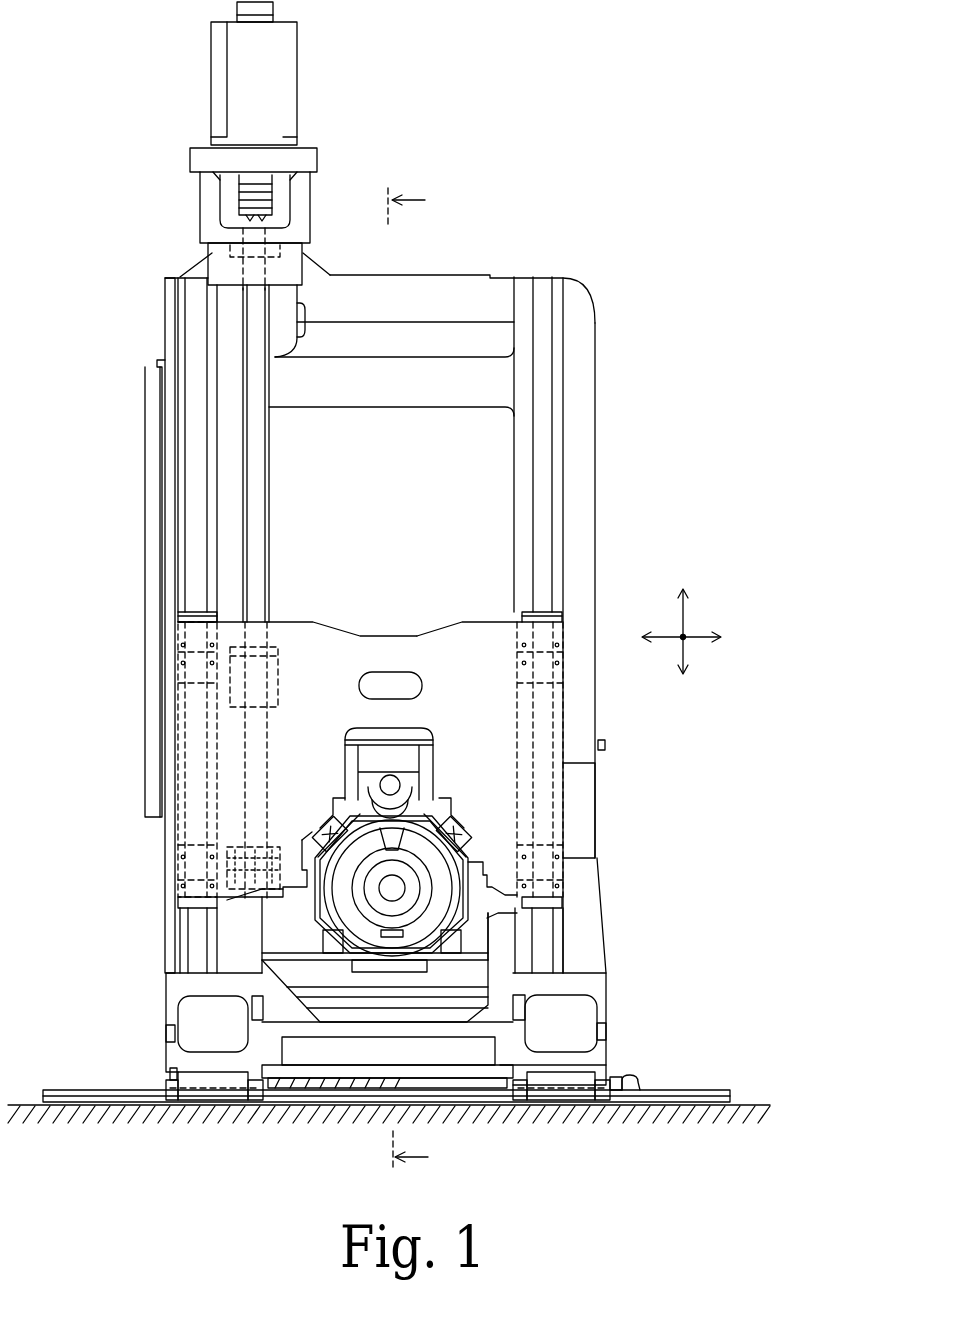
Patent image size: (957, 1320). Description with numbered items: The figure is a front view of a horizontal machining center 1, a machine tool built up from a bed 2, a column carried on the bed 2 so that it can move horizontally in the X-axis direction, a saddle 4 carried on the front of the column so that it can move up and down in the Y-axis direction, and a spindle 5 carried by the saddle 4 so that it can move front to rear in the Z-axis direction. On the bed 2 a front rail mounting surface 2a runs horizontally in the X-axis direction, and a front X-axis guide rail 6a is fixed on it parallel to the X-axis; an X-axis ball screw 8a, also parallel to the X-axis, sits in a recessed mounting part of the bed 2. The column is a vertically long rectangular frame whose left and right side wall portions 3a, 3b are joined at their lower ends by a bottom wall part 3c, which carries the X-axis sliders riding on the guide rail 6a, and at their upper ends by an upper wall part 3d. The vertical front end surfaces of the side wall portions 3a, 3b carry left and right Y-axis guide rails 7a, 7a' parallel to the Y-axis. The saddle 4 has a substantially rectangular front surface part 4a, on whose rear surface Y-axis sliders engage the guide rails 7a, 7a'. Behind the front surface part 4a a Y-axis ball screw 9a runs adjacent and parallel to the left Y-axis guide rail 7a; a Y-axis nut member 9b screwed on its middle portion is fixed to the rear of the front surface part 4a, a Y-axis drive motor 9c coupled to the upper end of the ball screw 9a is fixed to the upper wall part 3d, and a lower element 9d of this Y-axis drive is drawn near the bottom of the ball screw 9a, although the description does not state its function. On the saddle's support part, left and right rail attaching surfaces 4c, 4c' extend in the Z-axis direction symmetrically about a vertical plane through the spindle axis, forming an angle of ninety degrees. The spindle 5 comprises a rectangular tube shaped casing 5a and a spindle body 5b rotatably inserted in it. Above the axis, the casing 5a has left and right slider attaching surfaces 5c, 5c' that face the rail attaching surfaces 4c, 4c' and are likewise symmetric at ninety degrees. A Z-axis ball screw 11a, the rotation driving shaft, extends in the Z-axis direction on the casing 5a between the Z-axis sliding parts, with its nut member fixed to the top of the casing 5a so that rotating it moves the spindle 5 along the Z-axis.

The horizontal machining center 1 is at (508, 214).
The bed 2 is at (738, 1098).
The front rail mounting surface 2a is at (655, 1094).
The left side wall portion 3a is at (162, 484).
The right side wall portion 3b is at (598, 492).
The bottom wall part 3c is at (470, 1058).
The upper wall part 3d is at (457, 287).
The saddle 4 is at (390, 628).
The front surface part 4a is at (465, 637).
The left rail attaching surface 4c is at (320, 797).
The right rail attaching surface 4c' is at (461, 788).
The spindle 5 is at (472, 862).
The casing 5a is at (466, 903).
The spindle body 5b is at (383, 897).
The left slider attaching surface 5c is at (318, 829).
The right slider attaching surface 5c' is at (465, 821).
The front X-axis guide rail 6a is at (630, 1082).
The left Y-axis guide rail 7a is at (152, 625).
The right Y-axis guide rail 7a' is at (588, 625).
The X-axis ball screw 8a is at (543, 423).
The Y-axis ball screw 9a is at (270, 497).
The Y-axis nut member 9b is at (280, 673).
The Y-axis drive motor 9c is at (298, 117).
The rod end coupling 9d is at (250, 908).
The Z-axis ball screw 11a is at (394, 784).